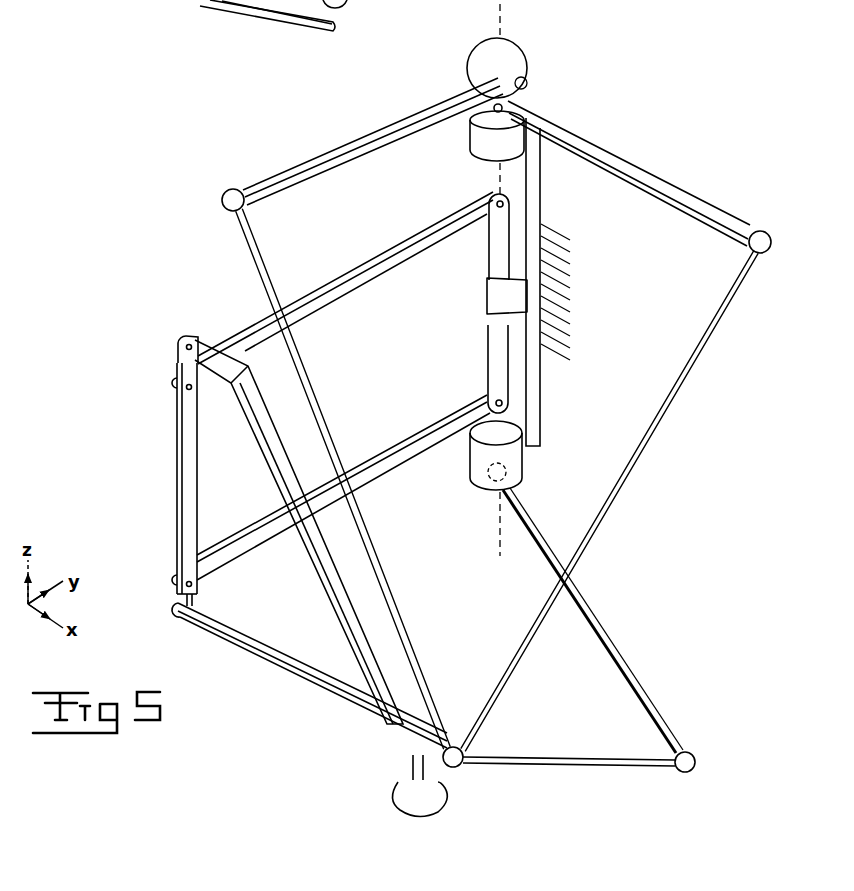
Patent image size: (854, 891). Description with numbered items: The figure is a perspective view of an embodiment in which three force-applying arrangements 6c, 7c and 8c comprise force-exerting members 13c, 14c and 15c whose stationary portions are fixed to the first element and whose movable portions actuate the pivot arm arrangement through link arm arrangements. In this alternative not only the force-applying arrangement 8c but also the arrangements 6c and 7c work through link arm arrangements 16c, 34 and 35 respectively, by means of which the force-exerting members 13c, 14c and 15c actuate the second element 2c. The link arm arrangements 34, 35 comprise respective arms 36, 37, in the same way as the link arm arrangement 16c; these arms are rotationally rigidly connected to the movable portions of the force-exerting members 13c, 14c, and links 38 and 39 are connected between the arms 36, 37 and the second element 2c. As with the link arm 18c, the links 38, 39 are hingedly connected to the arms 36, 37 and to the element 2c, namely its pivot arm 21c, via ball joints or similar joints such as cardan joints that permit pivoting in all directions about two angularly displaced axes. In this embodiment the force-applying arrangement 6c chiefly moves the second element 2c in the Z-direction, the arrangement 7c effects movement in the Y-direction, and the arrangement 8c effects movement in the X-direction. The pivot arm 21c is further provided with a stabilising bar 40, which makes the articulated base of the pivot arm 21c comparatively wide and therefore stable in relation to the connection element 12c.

The second element 2c is at (400, 765).
The force-applying arrangement 6c is at (373, 123).
The force-applying arrangement 7c is at (705, 123).
The force-applying arrangement 8c is at (680, 676).
The connection element 12c is at (190, 475).
The force-exerting member 13c is at (498, 57).
The force-exerting member 14c is at (488, 140).
The force-exerting member 15c is at (480, 454).
The link arm arrangement 16c is at (675, 729).
The link arm 18c is at (576, 760).
The pivot arm 21c is at (300, 672).
The link arm arrangement 34 is at (222, 172).
The link arm arrangement 35 is at (752, 210).
The arm 36 is at (319, 169).
The arm 37 is at (615, 163).
The link 38 is at (258, 276).
The link 39 is at (688, 367).
The stabilising bar 40 is at (330, 574).